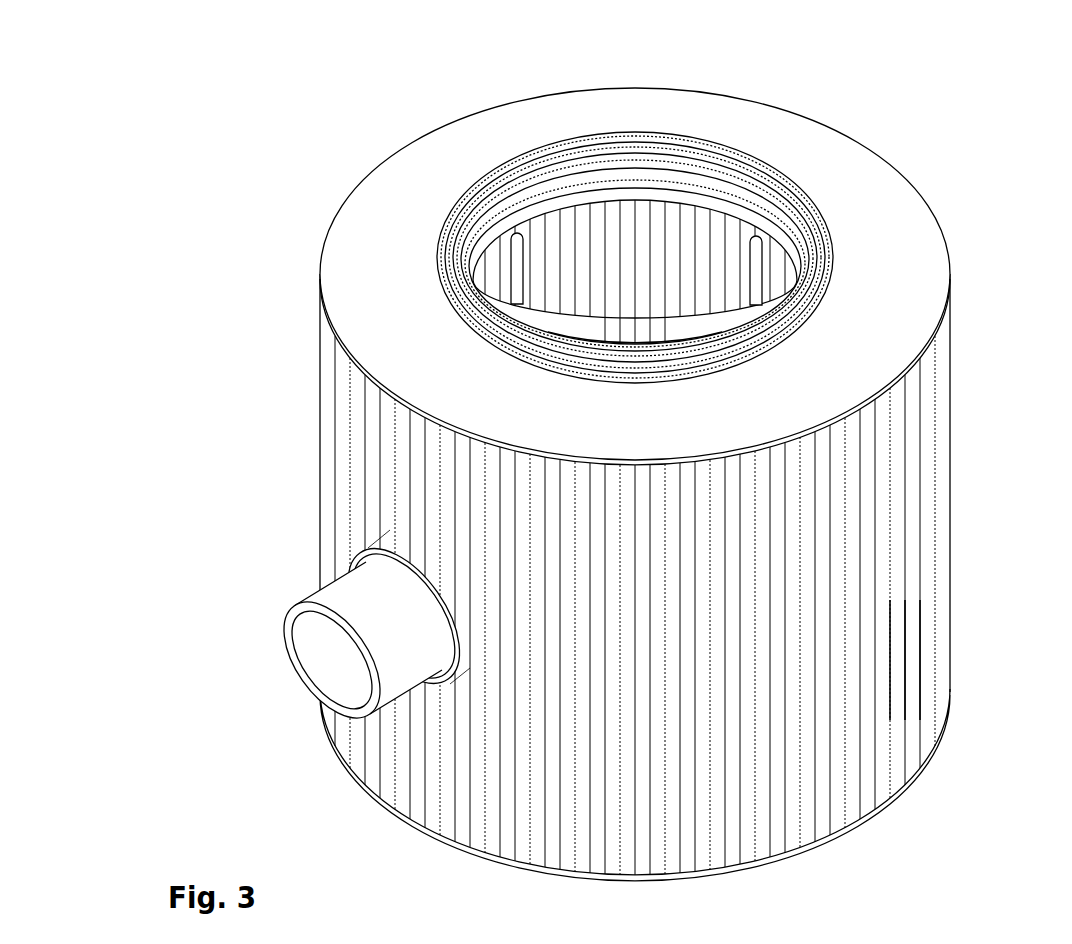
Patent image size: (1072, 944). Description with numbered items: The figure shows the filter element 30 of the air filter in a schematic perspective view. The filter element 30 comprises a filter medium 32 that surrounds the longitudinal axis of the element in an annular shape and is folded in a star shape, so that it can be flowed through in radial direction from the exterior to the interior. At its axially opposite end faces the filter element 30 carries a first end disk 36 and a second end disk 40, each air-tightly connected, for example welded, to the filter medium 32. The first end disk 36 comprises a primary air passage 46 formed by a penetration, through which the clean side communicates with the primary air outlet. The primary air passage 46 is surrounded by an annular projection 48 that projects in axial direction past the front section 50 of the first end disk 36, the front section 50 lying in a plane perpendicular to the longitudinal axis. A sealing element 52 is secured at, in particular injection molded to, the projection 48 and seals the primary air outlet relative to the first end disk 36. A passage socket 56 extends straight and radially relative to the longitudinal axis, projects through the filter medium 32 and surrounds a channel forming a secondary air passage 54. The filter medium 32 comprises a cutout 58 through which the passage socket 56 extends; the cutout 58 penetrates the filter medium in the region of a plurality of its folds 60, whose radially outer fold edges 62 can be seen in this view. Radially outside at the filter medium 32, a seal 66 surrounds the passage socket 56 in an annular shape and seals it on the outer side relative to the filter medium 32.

The filter element 30 is at (287, 198).
The filter medium 32 is at (932, 573).
The first end disk 36 is at (927, 233).
The second end disk 40 is at (930, 762).
The primary air passage 46 is at (630, 217).
The annular projection 48 is at (787, 322).
The front section 50 is at (752, 125).
The sealing element 52 is at (523, 160).
The secondary air passage 54 is at (335, 662).
The passage socket 56 is at (333, 594).
The cutout 58 is at (371, 528).
The folds 60 is at (882, 780).
The fold edges 62 is at (957, 660).
The seal 66 is at (380, 555).